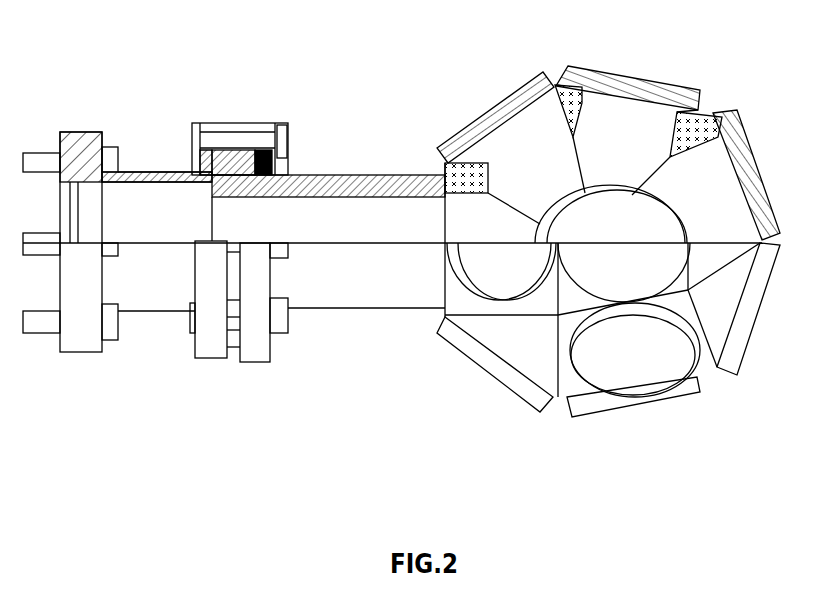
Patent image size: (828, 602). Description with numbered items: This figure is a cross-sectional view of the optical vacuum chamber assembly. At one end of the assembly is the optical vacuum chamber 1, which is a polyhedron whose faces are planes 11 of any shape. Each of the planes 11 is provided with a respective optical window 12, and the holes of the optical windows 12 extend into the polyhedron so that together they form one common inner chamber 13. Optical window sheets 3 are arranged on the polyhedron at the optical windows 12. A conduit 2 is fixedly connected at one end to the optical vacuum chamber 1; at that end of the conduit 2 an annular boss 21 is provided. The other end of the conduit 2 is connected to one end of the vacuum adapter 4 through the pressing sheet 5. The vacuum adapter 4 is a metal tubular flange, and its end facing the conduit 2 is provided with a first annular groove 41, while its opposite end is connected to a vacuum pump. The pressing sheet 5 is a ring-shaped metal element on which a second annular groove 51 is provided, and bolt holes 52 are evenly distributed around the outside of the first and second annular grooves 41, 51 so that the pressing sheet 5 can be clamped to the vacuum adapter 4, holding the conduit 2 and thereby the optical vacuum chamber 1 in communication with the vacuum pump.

The optical vacuum chamber 1 is at (710, 375).
The planes 11 is at (705, 112).
The optical windows 12 is at (618, 112).
The inner chamber 13 is at (623, 233).
The conduit 2 is at (343, 308).
The annular boss 21 is at (236, 160).
The optical window sheets 3 is at (507, 395).
The vacuum adapter 4 is at (160, 313).
The first annular groove 41 is at (213, 157).
The pressing sheet 5 is at (257, 362).
The second annular groove 51 is at (258, 157).
The bolt holes 52 is at (287, 148).